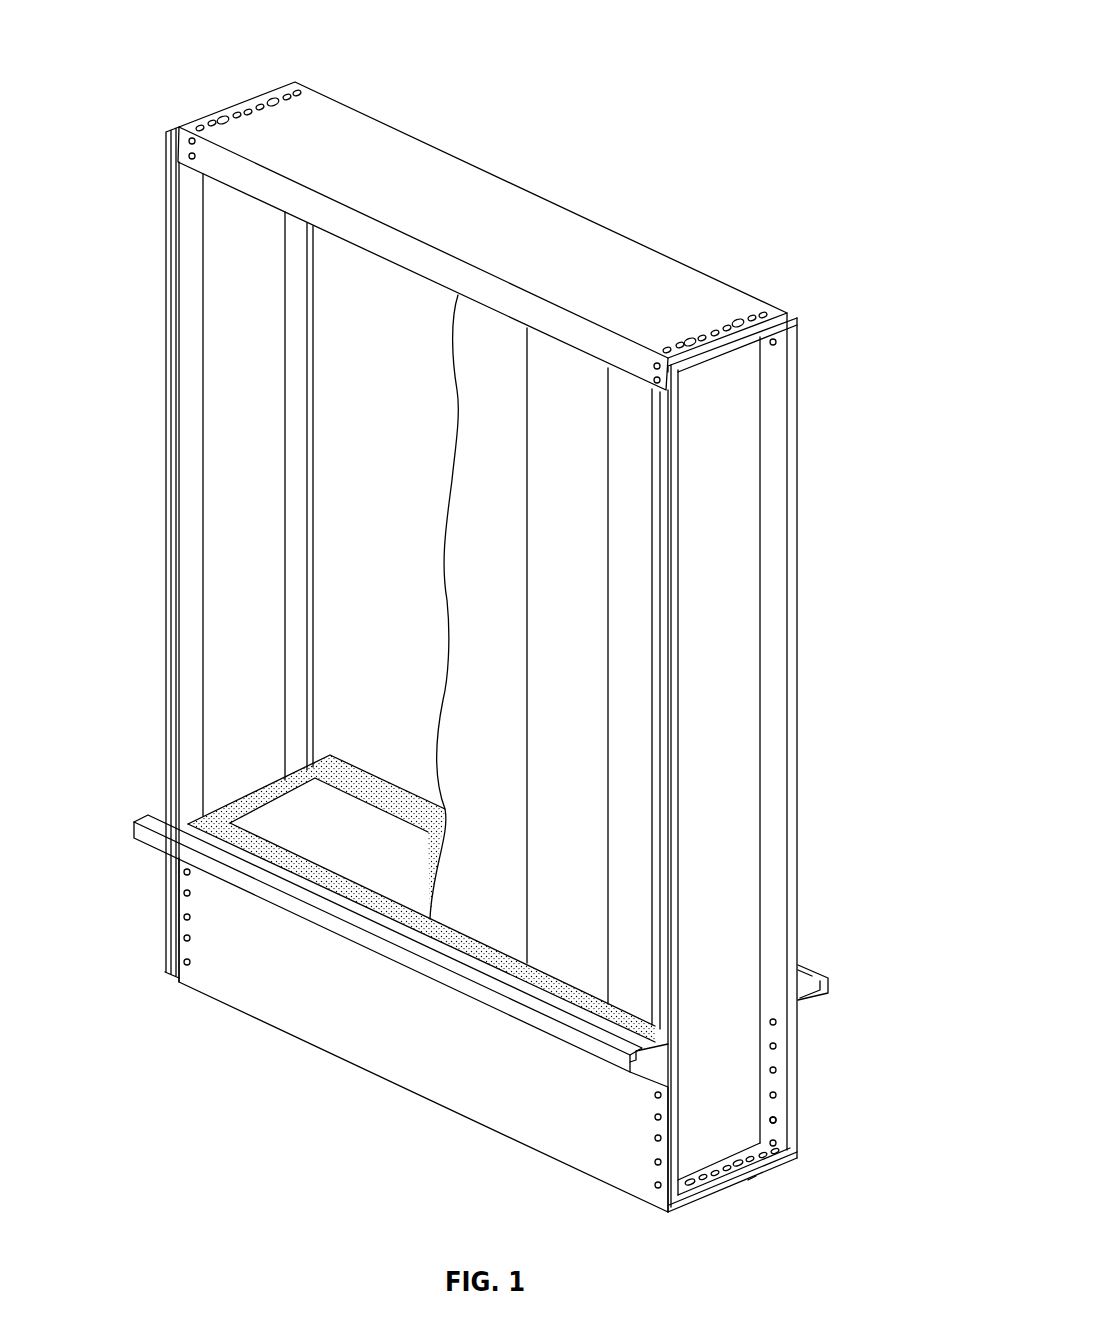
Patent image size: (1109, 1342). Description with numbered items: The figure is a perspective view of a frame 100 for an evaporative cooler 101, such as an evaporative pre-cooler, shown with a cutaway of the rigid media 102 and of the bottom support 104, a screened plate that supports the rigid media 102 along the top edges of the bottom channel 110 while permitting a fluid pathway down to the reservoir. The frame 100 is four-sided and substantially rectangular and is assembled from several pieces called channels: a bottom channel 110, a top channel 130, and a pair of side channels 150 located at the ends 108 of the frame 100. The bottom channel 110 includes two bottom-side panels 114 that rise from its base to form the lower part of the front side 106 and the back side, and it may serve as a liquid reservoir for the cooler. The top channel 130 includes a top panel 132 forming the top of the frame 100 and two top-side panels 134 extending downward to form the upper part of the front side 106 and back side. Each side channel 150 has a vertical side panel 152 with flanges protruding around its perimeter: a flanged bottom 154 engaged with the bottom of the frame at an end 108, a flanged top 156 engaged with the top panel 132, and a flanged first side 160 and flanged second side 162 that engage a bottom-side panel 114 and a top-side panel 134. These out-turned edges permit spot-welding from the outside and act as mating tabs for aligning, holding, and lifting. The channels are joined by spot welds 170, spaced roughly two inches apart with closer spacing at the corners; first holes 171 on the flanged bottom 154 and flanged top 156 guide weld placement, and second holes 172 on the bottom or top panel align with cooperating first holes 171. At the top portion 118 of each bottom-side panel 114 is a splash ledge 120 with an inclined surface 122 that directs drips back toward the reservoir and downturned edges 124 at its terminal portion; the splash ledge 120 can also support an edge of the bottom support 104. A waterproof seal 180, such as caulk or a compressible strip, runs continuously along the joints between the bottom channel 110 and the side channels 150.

The frame 100 is at (186, 108).
The evaporative cooler 101 is at (682, 40).
The rigid media 102 is at (527, 445).
The bottom support 104 is at (340, 820).
The front side 106 is at (350, 1040).
The end 108 is at (160, 932).
The bottom channel 110 is at (455, 1115).
The bottom-side panel 114 is at (578, 1160).
The top portion 118 is at (810, 1010).
The splash ledge 120 is at (138, 808).
The inclined surface 122 is at (812, 975).
The downturned edge 124 is at (829, 988).
The top channel 130 is at (650, 242).
The top panel 132 is at (515, 200).
The top-side panel 134 is at (418, 265).
The side channel 150 is at (748, 600).
The vertical side panel 152 is at (742, 700).
The flanged bottom 154 is at (777, 1152).
The flanged top 156 is at (705, 363).
The flanged first side 160 is at (680, 808).
The flanged second side 162 is at (778, 810).
The spot weld 170 is at (773, 1120).
The first hole 171 is at (745, 1163).
The second hole 172 is at (753, 1187).
The seal 180 is at (282, 780).